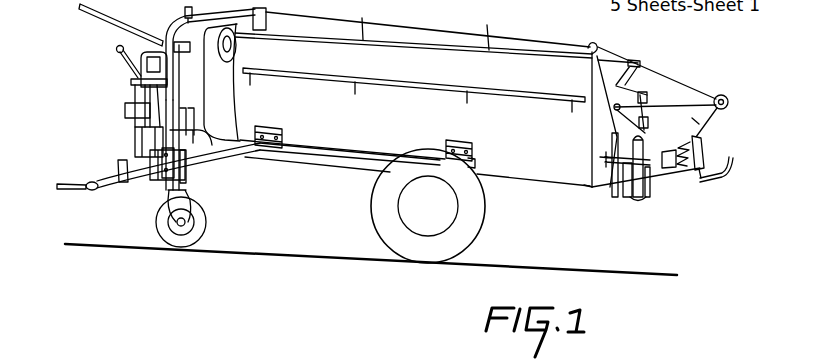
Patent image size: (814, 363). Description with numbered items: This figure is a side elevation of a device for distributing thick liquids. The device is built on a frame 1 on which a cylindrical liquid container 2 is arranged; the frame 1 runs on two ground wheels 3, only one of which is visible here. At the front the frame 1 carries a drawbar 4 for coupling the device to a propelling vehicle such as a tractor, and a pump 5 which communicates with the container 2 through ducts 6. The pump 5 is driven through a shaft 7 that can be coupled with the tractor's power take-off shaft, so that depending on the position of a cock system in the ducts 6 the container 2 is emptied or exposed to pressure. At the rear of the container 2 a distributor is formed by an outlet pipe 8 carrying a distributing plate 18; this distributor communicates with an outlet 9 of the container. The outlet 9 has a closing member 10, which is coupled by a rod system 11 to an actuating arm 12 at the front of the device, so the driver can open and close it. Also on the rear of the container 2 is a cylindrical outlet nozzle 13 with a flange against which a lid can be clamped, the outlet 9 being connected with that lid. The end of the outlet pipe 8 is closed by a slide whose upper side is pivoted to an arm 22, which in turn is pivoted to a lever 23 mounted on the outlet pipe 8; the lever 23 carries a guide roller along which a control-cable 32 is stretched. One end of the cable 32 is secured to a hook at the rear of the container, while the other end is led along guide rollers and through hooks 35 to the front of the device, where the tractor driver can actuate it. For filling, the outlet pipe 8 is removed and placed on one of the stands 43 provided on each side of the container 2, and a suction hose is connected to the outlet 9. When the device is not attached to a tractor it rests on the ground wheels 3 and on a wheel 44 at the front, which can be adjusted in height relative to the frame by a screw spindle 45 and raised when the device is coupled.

The frame 1 is at (335, 153).
The cylindrical liquid container 2 is at (440, 32).
The ground wheels 3 is at (468, 245).
The drawbar 4 is at (70, 190).
The pump 5 is at (124, 116).
The ducts 6 is at (150, 50).
The shaft 7 is at (152, 176).
The outlet pipe 8 is at (666, 176).
The outlet 9 is at (616, 198).
The closing member 10 is at (634, 203).
The rod system 11 is at (638, 88).
The actuating arm 12 is at (110, 14).
The cylindrical outlet nozzle 13 is at (587, 190).
The distributing plate 18 is at (714, 172).
The arm 22 is at (699, 137).
The lever 23 is at (692, 120).
The control-cable 32 is at (128, 65).
The hooks 35 is at (368, 18).
The stands 43 is at (412, 87).
The wheel 44 is at (206, 236).
The screw spindle 45 is at (198, 162).